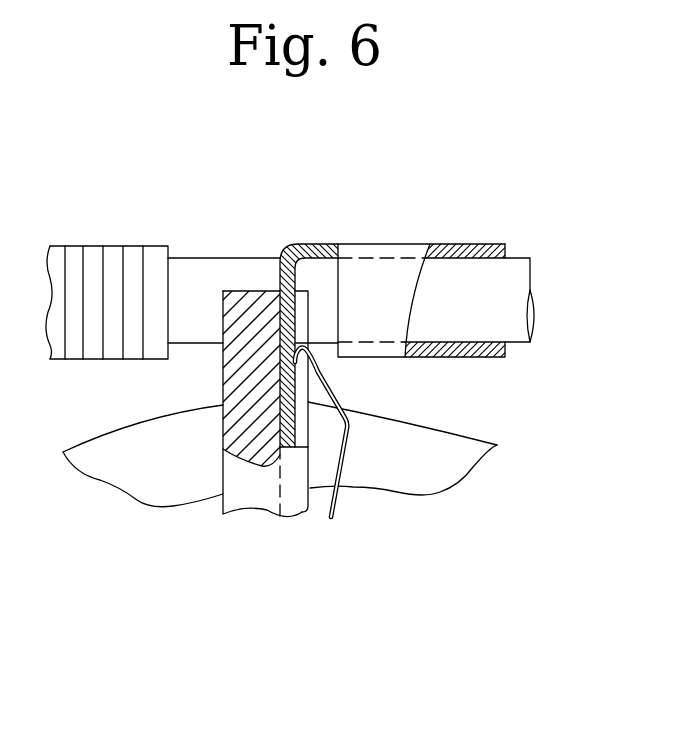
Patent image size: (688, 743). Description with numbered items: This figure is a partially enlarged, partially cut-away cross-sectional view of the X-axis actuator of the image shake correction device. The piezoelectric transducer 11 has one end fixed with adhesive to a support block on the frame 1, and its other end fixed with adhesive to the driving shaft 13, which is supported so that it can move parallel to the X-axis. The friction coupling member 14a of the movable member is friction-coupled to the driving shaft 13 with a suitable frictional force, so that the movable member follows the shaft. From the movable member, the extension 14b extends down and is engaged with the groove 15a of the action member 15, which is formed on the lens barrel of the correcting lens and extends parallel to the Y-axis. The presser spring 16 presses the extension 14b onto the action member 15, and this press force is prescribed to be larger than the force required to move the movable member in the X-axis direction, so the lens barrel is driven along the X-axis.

The frame 1 is at (456, 467).
The piezoelectric transducer 11 is at (93, 252).
The driving shaft 13 is at (191, 267).
The friction coupling member 14a is at (462, 246).
The extension 14b is at (292, 317).
The action member 15 is at (237, 479).
The groove 15a is at (300, 457).
The presser spring 16 is at (327, 395).